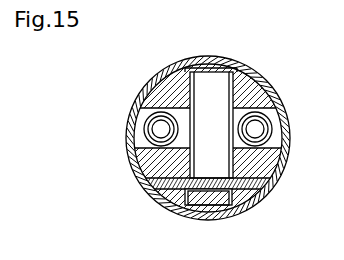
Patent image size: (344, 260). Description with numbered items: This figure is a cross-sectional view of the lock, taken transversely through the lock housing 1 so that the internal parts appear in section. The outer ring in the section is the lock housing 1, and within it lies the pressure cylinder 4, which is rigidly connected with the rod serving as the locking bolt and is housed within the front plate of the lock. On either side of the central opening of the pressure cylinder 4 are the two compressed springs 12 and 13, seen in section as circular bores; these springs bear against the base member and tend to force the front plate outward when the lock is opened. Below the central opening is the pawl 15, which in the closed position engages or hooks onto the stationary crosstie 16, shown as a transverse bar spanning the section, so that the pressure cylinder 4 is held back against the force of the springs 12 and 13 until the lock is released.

The lock housing 1 is at (249, 79).
The pressure cylinder 4 is at (289, 163).
The compressed spring 12 is at (144, 128).
The compressed spring 13 is at (272, 128).
The pawl 15 is at (236, 215).
The crosstie 16 is at (267, 189).